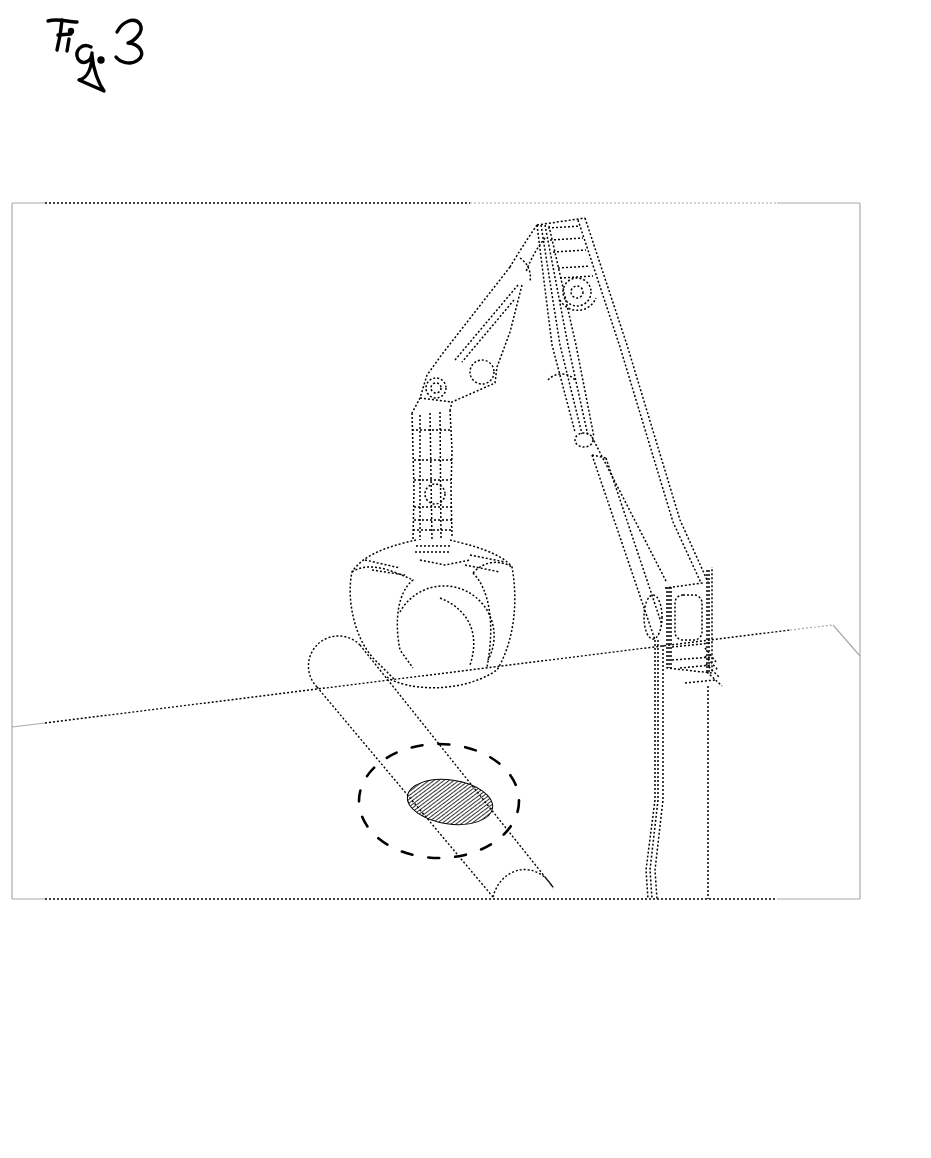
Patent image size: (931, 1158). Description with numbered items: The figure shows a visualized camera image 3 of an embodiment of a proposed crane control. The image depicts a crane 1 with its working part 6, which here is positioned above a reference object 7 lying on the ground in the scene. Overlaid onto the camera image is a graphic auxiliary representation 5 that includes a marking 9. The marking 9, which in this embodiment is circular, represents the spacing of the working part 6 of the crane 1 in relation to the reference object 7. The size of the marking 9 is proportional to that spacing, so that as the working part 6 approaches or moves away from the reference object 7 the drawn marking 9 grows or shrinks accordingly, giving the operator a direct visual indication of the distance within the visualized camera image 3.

The crane 1 is at (783, 391).
The visualized camera image 3 is at (538, 98).
The graphic auxiliary representation 5 is at (266, 818).
The working part 6 is at (380, 605).
The reference object 7 is at (519, 887).
The marking 9 is at (410, 808).